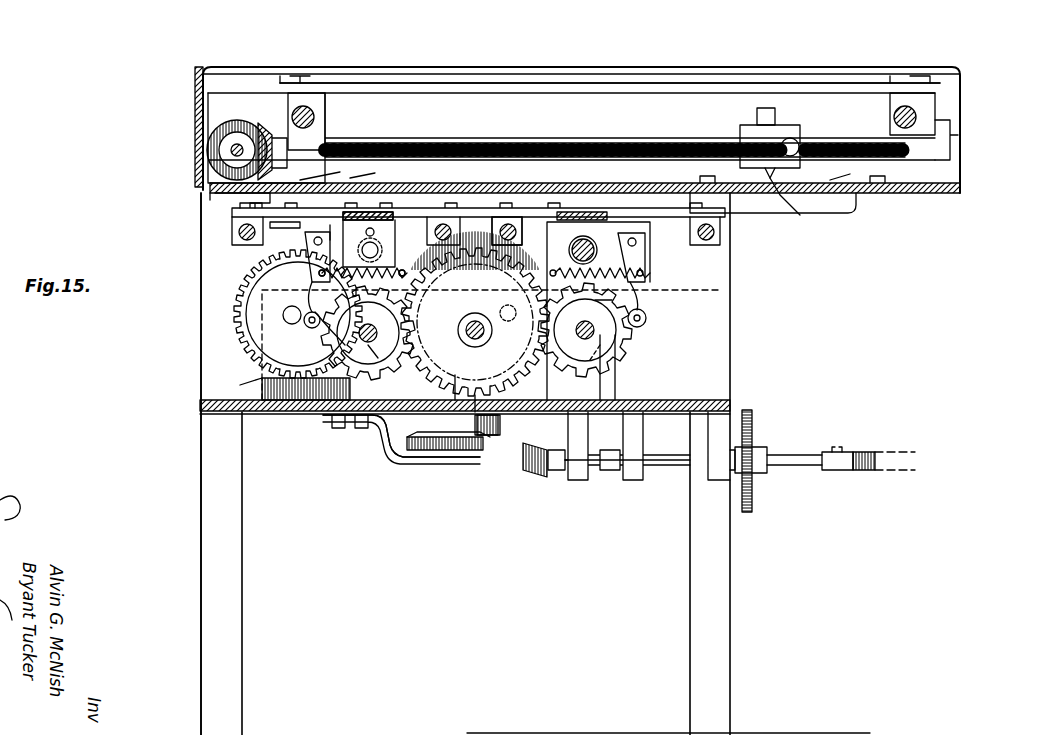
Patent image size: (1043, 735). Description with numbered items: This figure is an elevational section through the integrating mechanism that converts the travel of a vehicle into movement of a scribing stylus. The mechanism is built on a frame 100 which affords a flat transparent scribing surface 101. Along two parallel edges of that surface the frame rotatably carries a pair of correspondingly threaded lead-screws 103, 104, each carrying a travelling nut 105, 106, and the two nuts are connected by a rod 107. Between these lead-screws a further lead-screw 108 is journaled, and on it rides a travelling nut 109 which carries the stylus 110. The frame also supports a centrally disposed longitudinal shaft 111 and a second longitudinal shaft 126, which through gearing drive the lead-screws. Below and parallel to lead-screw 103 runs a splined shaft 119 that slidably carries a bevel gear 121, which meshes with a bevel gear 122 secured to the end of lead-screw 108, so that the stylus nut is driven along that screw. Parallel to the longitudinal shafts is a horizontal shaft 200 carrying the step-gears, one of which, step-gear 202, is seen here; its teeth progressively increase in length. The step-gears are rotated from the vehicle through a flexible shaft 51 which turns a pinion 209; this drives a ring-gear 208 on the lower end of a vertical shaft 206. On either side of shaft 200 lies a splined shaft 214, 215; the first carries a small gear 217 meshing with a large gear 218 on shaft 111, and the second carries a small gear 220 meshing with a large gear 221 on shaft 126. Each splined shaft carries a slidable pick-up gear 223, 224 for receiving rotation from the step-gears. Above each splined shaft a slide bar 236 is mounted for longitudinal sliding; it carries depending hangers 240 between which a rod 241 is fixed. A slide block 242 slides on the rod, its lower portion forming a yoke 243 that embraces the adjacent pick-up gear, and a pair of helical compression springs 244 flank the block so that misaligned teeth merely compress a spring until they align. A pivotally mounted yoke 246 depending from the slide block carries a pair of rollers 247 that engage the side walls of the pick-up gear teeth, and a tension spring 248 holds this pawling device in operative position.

The flexible shaft 51 is at (880, 470).
The frame 100 is at (192, 393).
The scribing surface 101 is at (215, 200).
The lead-screw 103 is at (312, 125).
The lead-screw 104 is at (916, 115).
The travelling nut 105 is at (314, 112).
The travelling nut 106 is at (925, 100).
The rod 107 is at (602, 96).
The lead-screw 108 is at (828, 145).
The travelling nut 109 is at (788, 127).
The stylus 110 is at (799, 205).
The shaft 111 is at (510, 322).
The splined shaft 119 is at (237, 160).
The bevel gear 121 is at (215, 143).
The bevel gear 122 is at (222, 125).
The shaft 126 is at (250, 345).
The horizontal shaft 200 is at (470, 340).
The step-gear 202 is at (480, 385).
The vertical shaft 206 is at (440, 455).
The ring-gear 208 is at (460, 452).
The pinion 209 is at (535, 478).
The splined shaft 214 is at (605, 338).
The splined shaft 215 is at (335, 358).
The small gear 217 is at (600, 380).
The large gear 218 is at (540, 215).
The small gear 220 is at (376, 376).
The large gear 221 is at (250, 358).
The pick-up gear 223 is at (595, 336).
The pick-up gear 224 is at (402, 364).
The slide bar 236 is at (440, 180).
The hanger 240 is at (383, 252).
The rod 241 is at (618, 215).
The slide block 242 is at (305, 238).
The yoke 243 is at (290, 316).
The helical compression spring 244 is at (650, 265).
The pivotally-mounted yoke 246 is at (320, 272).
The roller 247 is at (300, 338).
The tension spring 248 is at (335, 290).